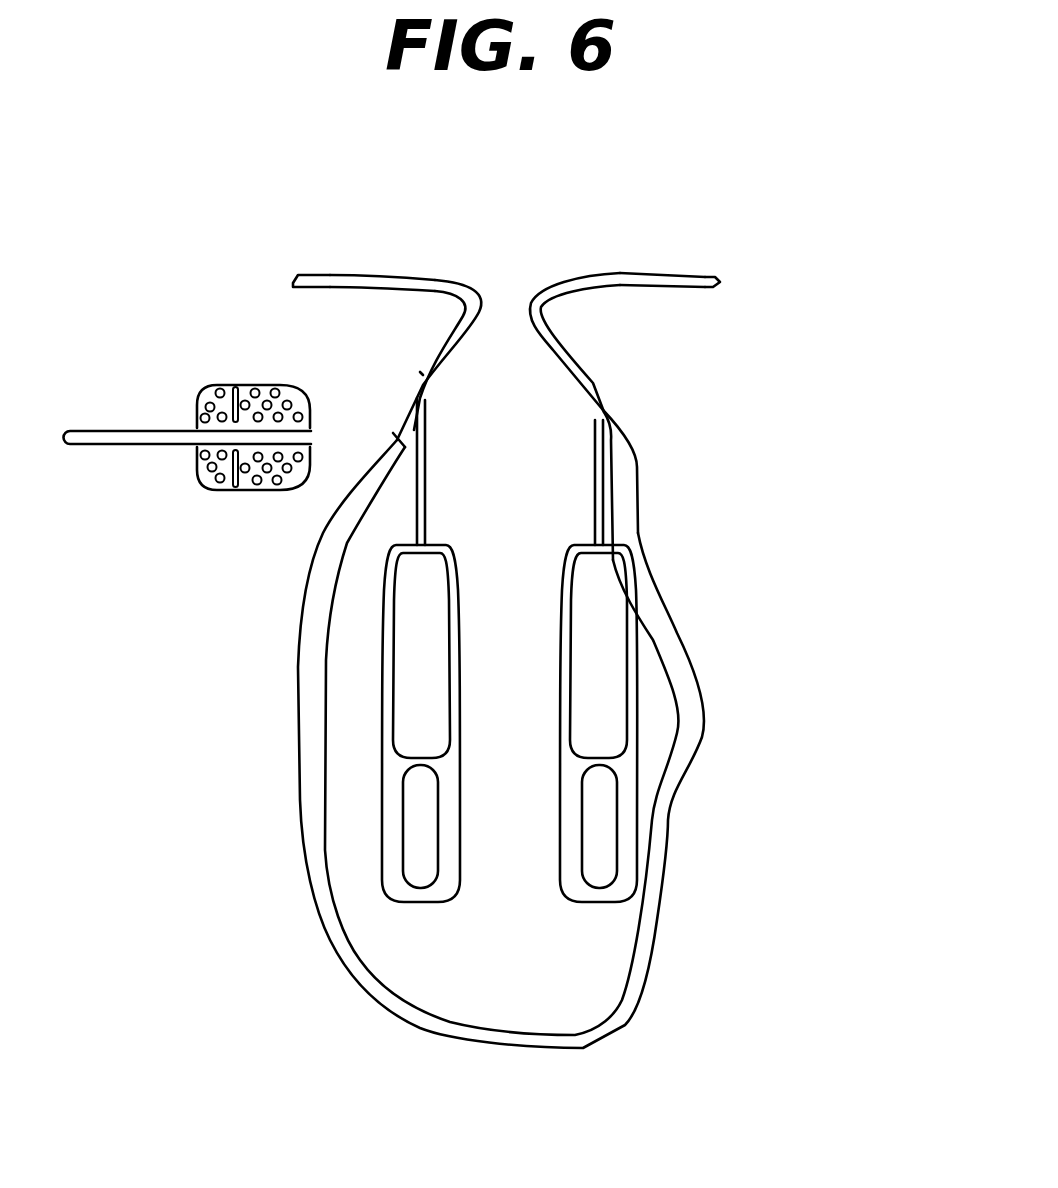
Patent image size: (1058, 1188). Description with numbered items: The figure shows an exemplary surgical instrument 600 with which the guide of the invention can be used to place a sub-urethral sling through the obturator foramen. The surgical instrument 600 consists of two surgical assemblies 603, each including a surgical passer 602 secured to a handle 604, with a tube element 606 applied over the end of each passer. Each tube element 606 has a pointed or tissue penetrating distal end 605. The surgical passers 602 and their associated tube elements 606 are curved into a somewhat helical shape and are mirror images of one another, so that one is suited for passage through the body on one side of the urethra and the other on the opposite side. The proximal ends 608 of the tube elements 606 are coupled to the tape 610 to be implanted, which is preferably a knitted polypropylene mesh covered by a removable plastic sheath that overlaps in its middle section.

The surgical instrument 600 is at (725, 474).
The surgical passer 602 is at (594, 470).
The surgical assembly 603 is at (423, 320).
The handle 604 is at (590, 904).
The tissue penetrating distal end 605 is at (298, 275).
The tube element 606 is at (357, 275).
The proximal end 608 is at (614, 432).
The tape 610 is at (705, 745).